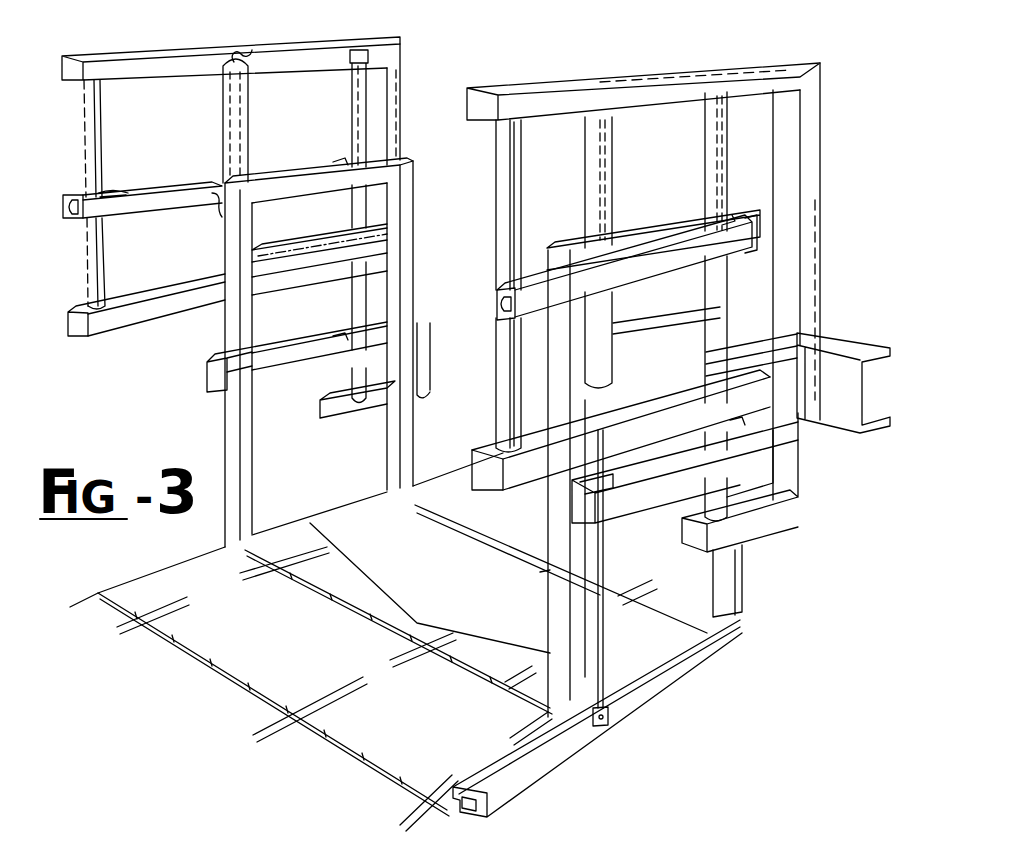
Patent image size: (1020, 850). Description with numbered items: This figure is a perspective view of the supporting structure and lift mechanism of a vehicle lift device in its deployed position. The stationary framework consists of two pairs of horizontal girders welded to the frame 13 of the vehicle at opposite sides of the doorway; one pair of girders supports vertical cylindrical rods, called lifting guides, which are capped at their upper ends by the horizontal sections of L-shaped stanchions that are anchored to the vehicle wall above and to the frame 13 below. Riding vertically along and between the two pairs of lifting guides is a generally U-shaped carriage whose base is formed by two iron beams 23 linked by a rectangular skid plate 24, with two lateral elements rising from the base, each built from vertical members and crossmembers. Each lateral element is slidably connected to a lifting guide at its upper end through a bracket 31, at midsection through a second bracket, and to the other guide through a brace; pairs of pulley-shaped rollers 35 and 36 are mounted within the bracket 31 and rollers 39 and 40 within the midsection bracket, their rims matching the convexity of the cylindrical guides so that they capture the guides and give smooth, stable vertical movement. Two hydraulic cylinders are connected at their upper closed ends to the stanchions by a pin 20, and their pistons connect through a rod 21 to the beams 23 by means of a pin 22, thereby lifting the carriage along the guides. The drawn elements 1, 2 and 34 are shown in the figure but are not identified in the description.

The hose line 1 is at (377, 597).
The platform rail 2 is at (152, 573).
The channel bracket 13 is at (837, 342).
The hook 20 is at (251, 56).
The rod 21 is at (603, 648).
The stop block 22 is at (607, 720).
The base beam 23 is at (317, 513).
The base plate 24 is at (643, 600).
The end block 31 is at (737, 235).
The clip 34 is at (214, 196).
The clip 35 is at (340, 160).
The clip 36 is at (728, 218).
The clip 39 is at (338, 336).
The bolt 40 is at (737, 423).